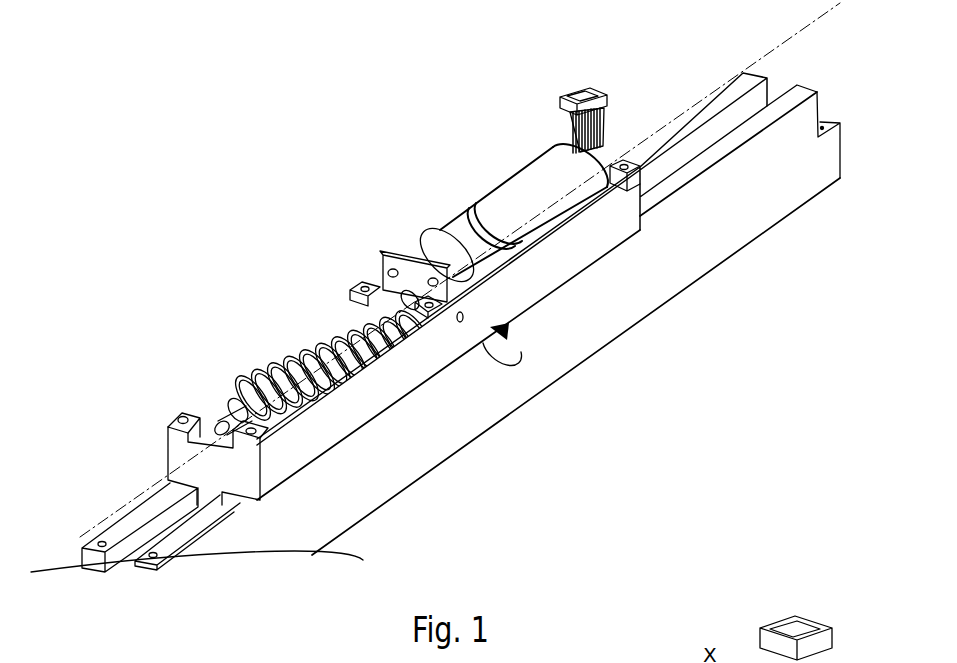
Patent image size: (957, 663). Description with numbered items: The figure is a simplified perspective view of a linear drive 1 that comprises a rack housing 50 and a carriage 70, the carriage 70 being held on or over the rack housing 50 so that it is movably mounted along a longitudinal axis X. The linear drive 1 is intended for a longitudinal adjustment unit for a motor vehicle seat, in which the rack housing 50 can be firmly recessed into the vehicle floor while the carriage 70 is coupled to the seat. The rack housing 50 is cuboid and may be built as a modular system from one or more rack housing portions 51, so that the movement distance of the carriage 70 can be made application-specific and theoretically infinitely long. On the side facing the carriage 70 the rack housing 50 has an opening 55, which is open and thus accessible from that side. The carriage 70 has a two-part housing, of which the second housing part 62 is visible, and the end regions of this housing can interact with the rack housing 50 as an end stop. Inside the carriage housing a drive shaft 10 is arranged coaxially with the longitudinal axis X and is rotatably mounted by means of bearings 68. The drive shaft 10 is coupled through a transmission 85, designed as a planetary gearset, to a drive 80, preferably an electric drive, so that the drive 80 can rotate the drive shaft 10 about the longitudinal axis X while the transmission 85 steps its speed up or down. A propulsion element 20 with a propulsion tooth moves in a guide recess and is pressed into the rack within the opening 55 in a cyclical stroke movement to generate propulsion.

The linear drive 1 is at (172, 232).
The drive shaft 10 is at (224, 405).
The propulsion element 20 is at (322, 305).
The rack housing 50 is at (600, 302).
The rack housing portion 51 is at (803, 131).
The opening 55 is at (742, 118).
The second housing part 62 is at (188, 452).
The bearings 68 is at (218, 418).
The carriage 70 is at (508, 333).
The drive 80 is at (545, 182).
The transmission 85 is at (463, 255).